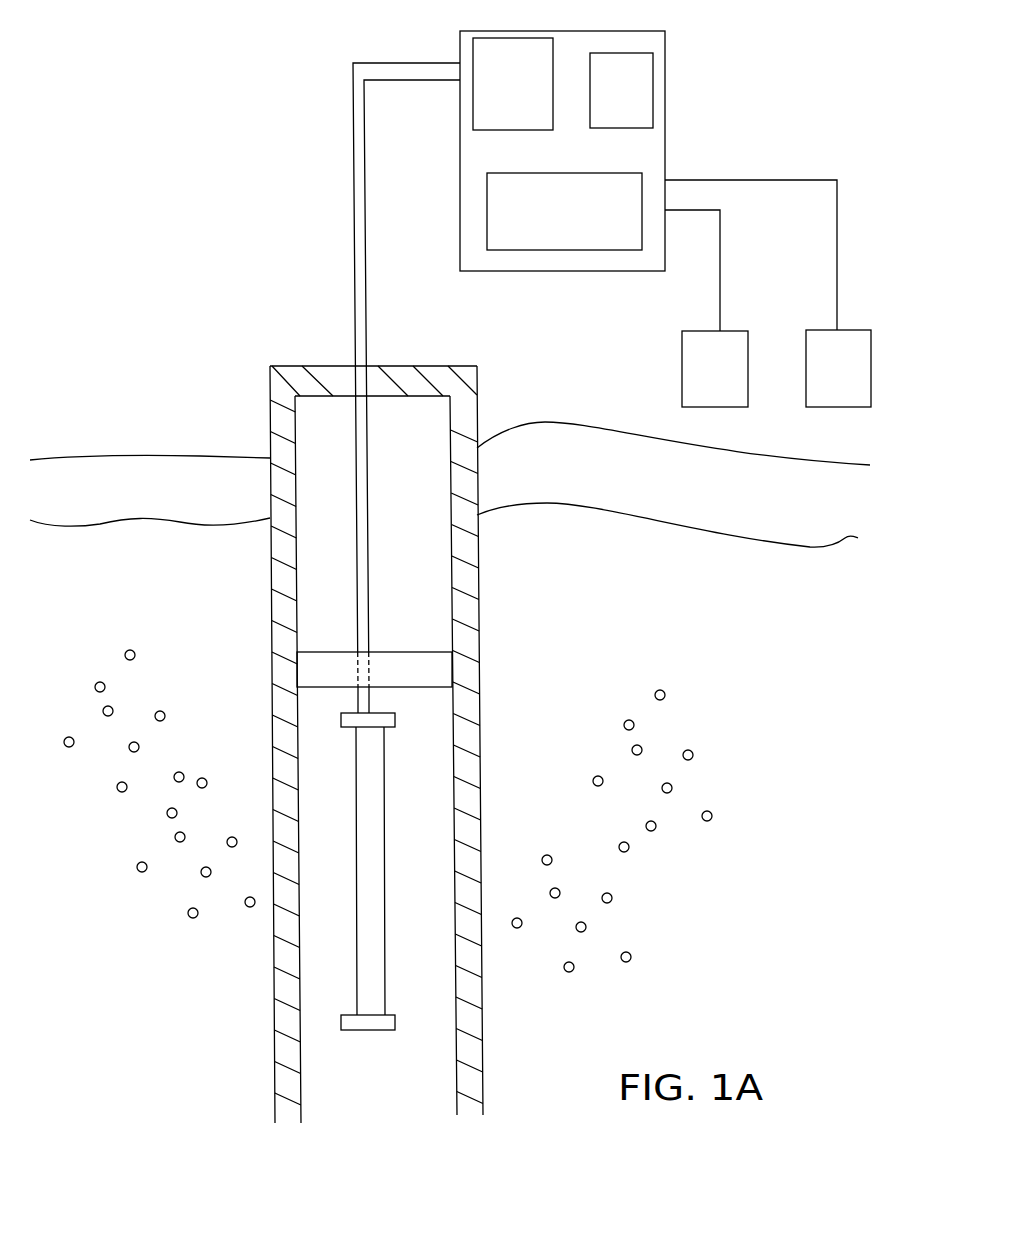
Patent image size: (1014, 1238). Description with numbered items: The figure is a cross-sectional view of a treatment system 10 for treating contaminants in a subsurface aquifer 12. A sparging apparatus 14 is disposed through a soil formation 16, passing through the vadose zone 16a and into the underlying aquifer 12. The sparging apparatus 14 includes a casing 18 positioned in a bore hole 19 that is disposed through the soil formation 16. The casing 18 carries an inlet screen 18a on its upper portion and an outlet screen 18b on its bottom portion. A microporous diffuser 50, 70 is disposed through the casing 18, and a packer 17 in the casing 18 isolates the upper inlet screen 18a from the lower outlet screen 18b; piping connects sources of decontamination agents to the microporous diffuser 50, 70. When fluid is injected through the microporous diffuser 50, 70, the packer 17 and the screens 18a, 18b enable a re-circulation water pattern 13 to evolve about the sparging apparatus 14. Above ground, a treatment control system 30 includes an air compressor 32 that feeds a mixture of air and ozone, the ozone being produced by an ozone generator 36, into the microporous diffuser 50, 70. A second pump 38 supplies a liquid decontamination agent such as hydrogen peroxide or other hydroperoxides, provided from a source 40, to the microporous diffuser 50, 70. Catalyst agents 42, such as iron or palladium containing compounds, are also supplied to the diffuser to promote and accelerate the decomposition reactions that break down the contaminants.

The treatment system 10 is at (297, 293).
The subsurface aquifer 12 is at (717, 915).
The re-circulation water pattern 13 is at (277, 920).
The sparging apparatus 14 is at (238, 972).
The soil formation 16 is at (135, 577).
The vadose zone 16a is at (615, 481).
The packer 17 is at (430, 668).
The casing 18 is at (456, 744).
The inlet screen 18a is at (477, 590).
The outlet screen 18b is at (504, 892).
The bore hole 19 is at (263, 352).
The treatment control system 30 is at (610, 151).
The air compressor 32 is at (406, 388).
The ozone generator 36 is at (513, 84).
The second pump 38 is at (564, 211).
The source 40 is at (682, 385).
The catalyst agents 42 is at (838, 328).
The microporous diffuser 50 is at (569, 839).
The microporous diffuser 70 is at (385, 787).